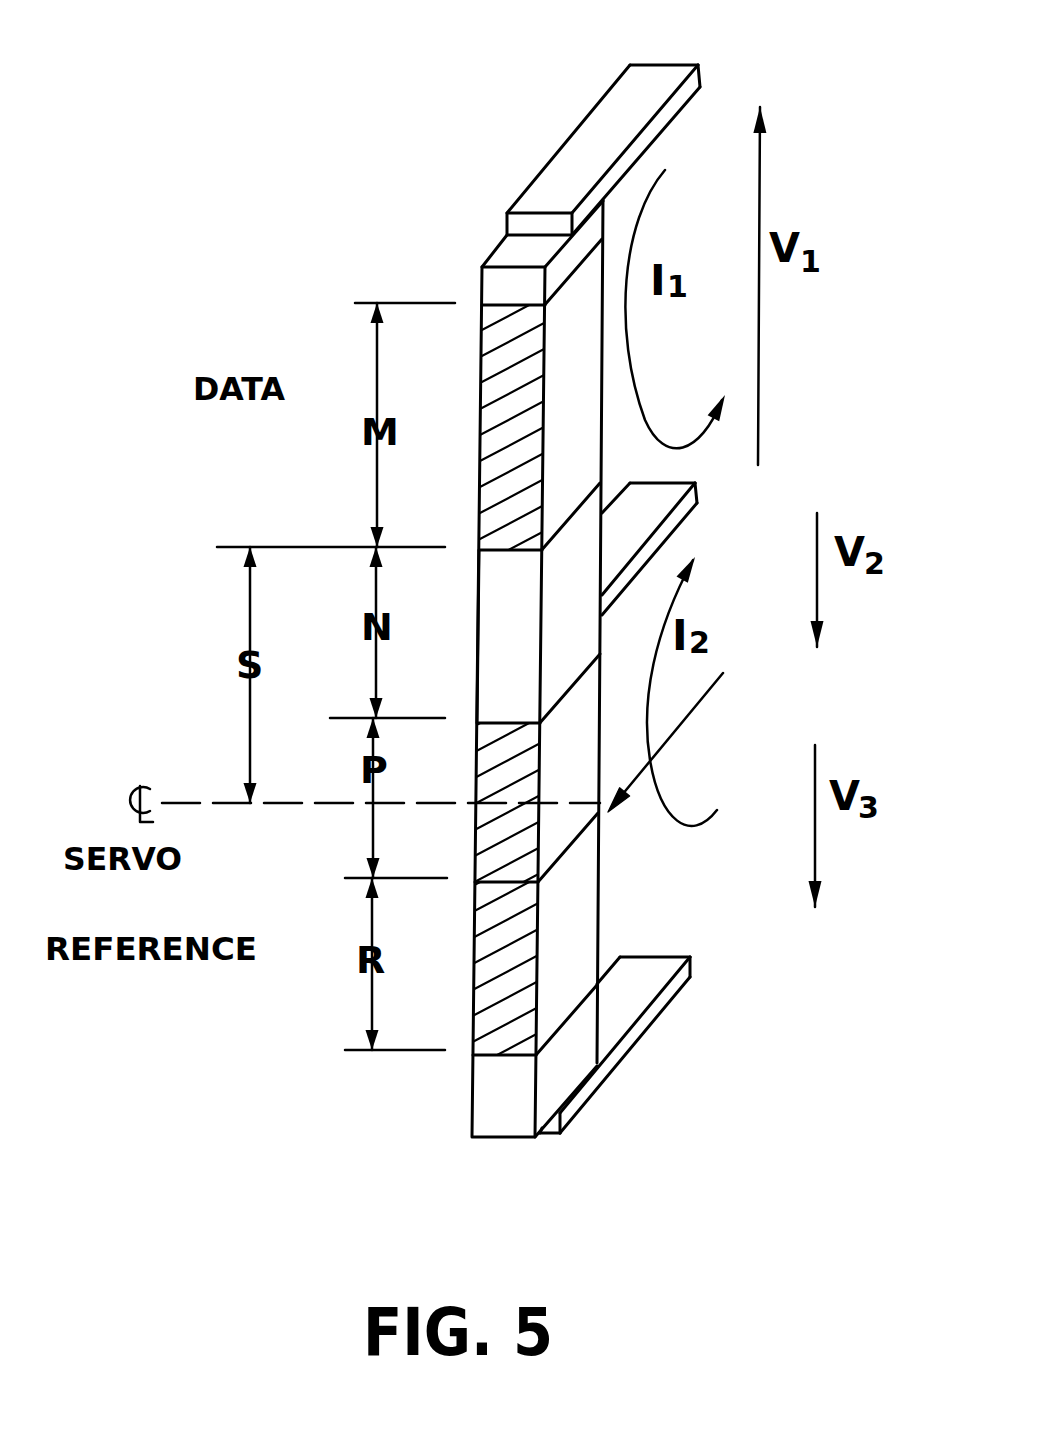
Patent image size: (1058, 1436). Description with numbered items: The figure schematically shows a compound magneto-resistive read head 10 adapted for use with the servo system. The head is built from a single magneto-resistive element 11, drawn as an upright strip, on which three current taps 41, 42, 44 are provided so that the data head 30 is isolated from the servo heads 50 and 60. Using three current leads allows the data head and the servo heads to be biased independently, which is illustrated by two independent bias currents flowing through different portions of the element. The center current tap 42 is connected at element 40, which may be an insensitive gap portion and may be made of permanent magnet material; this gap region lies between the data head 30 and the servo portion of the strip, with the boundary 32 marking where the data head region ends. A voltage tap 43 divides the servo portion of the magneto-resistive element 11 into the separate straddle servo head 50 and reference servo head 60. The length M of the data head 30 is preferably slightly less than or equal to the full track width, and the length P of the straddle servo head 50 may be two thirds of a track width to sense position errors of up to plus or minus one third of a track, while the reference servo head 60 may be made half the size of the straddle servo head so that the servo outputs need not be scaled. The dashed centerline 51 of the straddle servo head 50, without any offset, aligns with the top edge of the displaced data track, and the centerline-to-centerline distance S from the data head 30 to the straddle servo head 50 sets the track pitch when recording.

The compound magneto-resistive read head 10 is at (432, 185).
The magneto-resistive element 11 is at (570, 900).
The data head 30 is at (479, 415).
The boundary of data region 32 is at (480, 550).
The insensitive gap portion 40 is at (479, 647).
The current tap 41 is at (700, 68).
The center current tap 42 is at (697, 483).
The voltage tap 43 is at (692, 710).
The current tap 44 is at (670, 957).
The straddle servo head 50 is at (473, 847).
The centerline of straddle servo head 51 is at (317, 803).
The reference servo head 60 is at (472, 982).